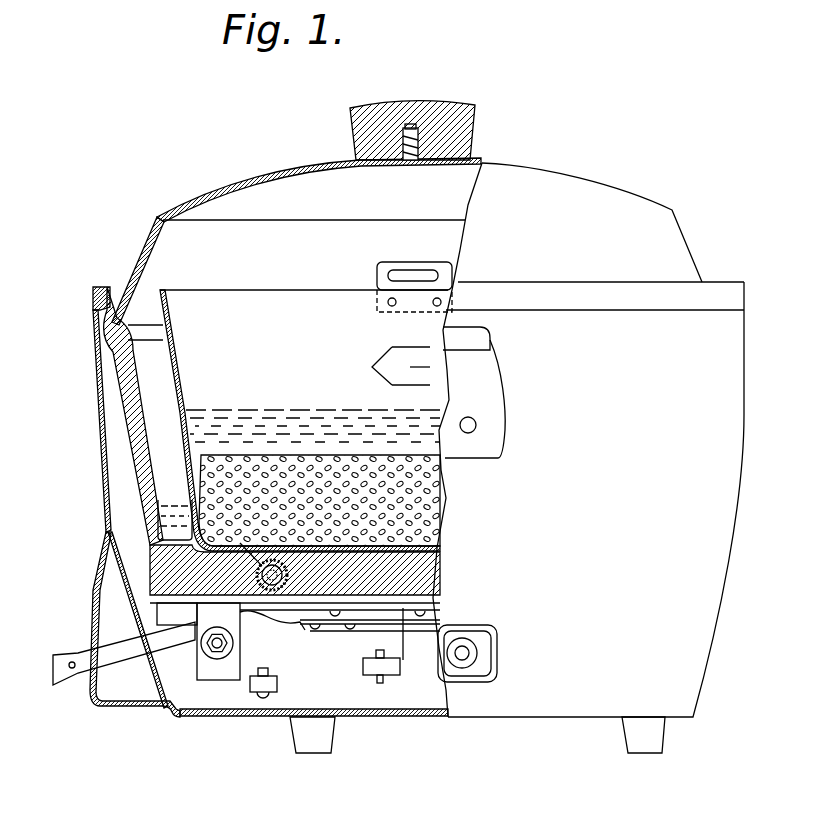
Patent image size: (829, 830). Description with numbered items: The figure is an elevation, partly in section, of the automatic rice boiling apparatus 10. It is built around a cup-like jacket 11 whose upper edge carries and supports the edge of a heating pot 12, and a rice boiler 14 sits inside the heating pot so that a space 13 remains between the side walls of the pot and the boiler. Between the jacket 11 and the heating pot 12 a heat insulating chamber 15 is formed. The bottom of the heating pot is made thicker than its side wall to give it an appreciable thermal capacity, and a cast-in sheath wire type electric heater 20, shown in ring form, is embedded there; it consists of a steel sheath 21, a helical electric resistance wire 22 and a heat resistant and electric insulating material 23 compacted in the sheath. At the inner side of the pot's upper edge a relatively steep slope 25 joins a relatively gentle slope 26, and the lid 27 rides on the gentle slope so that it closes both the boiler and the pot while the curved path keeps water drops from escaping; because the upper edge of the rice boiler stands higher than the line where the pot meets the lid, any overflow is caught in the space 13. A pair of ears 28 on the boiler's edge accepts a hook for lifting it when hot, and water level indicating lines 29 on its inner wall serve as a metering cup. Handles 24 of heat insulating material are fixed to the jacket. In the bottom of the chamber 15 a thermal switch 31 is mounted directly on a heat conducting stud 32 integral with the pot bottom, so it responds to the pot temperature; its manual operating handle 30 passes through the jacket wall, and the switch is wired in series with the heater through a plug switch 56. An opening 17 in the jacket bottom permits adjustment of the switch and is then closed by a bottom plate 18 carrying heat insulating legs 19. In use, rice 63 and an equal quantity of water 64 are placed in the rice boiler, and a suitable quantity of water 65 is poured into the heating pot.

The automatic rice boiling apparatus 10 is at (125, 242).
The cup-like jacket 11 is at (100, 437).
The heating pot 12 is at (137, 465).
The space 13 is at (130, 420).
The rice boiler 14 is at (182, 460).
The heat insulating chamber 15 is at (127, 512).
The opening 17 is at (300, 712).
The bottom plate 18 is at (255, 718).
The legs 19 is at (322, 742).
The cast-in sheath wire type electric heater 20 is at (270, 562).
The steel sheath 21 is at (278, 563).
The helical electric resistance wire 22 is at (285, 565).
The heat resistant and electric insulating material 23 is at (243, 545).
The handles 24 is at (487, 382).
The steep slope 25 is at (112, 287).
The gentle slope 26 is at (130, 328).
The lid 27 is at (228, 182).
The ears 28 is at (375, 268).
The water level indicating lines 29 is at (382, 366).
The manual operating handle 30 is at (172, 640).
The thermal switch 31 is at (318, 666).
The heat conducting stud 32 is at (432, 600).
The plug switch 56 is at (480, 648).
The rice 63 is at (445, 510).
The water 64 is at (265, 412).
The water 65 is at (170, 510).